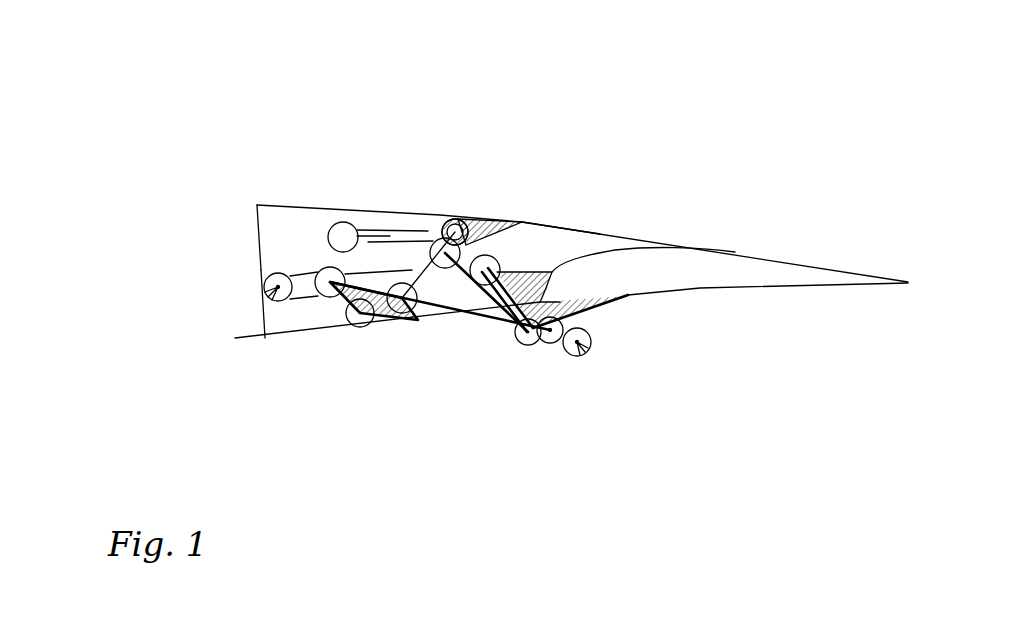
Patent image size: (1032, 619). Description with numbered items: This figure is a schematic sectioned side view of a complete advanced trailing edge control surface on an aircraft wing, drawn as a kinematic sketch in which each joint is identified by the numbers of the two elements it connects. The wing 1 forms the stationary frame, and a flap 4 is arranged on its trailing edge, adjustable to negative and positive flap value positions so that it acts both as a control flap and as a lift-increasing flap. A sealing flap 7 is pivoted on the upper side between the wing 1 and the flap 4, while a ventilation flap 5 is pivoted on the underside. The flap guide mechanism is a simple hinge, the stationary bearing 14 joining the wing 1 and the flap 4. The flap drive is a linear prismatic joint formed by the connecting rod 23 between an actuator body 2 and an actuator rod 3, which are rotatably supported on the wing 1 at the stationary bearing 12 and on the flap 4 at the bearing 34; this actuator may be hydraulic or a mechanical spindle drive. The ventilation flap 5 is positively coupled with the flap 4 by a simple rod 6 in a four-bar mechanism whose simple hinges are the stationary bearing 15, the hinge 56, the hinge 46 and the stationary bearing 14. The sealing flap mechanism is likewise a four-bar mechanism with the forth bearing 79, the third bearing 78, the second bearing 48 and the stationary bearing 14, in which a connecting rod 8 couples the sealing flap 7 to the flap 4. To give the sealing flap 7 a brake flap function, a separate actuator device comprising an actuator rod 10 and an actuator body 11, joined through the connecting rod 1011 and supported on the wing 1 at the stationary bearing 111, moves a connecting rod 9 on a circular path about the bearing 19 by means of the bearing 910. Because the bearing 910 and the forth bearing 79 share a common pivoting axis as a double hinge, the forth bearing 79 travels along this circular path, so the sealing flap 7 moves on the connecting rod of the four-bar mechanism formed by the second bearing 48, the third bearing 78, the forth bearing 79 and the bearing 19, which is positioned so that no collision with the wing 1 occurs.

The wing 1 is at (255, 262).
The actuator body 2 is at (303, 273).
The actuator rod 3 is at (505, 220).
The flap 4 is at (685, 290).
The ventilation flap 5 is at (425, 322).
The rod 6 is at (555, 222).
The sealing flap 7 is at (495, 268).
The connecting rod 8 is at (490, 300).
The connecting rod 9 is at (430, 272).
The actuator rod 10 is at (415, 232).
The actuator body 11 is at (373, 229).
The stationary bearing 12 is at (260, 302).
The stationary bearing 14 is at (553, 343).
The stationary bearing 15 is at (355, 327).
The bearing 19 is at (385, 322).
The connecting rod 23 is at (378, 273).
The bearing 34 is at (500, 265).
The hinge 46 is at (582, 355).
The second bearing 48 is at (530, 343).
The hinge 56 is at (303, 273).
The third bearing 78 is at (443, 238).
The forth bearing 79 is at (464, 220).
The stationary bearing, hinge 111 is at (339, 237).
The bearing 910 is at (458, 219).
The connecting rod 1011 is at (393, 232).